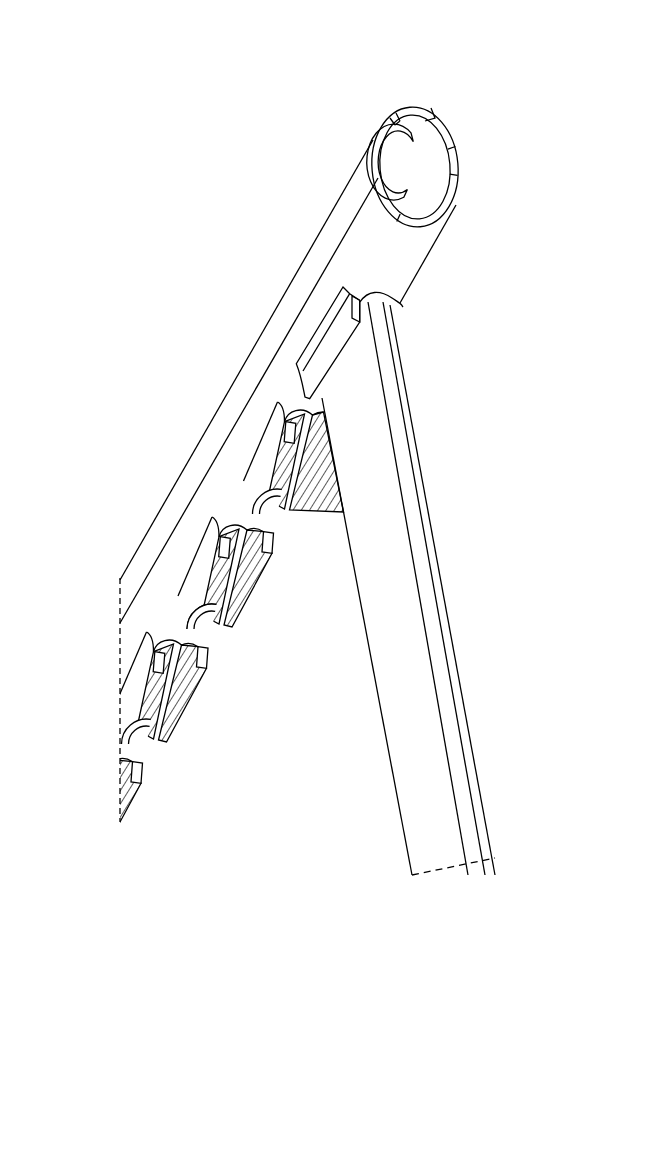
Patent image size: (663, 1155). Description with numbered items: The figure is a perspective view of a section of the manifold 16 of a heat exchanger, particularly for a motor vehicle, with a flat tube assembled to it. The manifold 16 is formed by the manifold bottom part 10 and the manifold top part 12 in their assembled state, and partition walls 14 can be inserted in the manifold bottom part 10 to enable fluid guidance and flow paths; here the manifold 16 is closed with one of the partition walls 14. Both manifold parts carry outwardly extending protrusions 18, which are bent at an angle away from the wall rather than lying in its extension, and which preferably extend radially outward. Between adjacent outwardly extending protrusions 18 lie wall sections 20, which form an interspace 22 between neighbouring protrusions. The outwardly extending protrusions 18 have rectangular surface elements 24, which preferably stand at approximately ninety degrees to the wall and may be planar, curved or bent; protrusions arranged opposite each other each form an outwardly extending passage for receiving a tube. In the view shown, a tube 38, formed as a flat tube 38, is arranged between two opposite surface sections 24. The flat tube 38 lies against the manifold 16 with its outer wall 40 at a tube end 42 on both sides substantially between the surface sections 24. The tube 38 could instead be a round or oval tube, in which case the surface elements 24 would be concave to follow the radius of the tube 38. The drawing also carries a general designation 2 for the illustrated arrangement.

The rail 2 is at (327, 338).
The manifold bottom part 10 is at (448, 143).
The manifold top part 12 is at (381, 132).
The partition walls 14 is at (417, 178).
The manifold 16 is at (256, 136).
The outwardly extending protrusions 18 is at (268, 455).
The wall sections 20 is at (228, 510).
The interspace 22 is at (167, 618).
The surface elements 24 is at (327, 360).
The tube 38 is at (415, 728).
The outer wall 40 is at (388, 509).
The tube end 42 is at (373, 322).